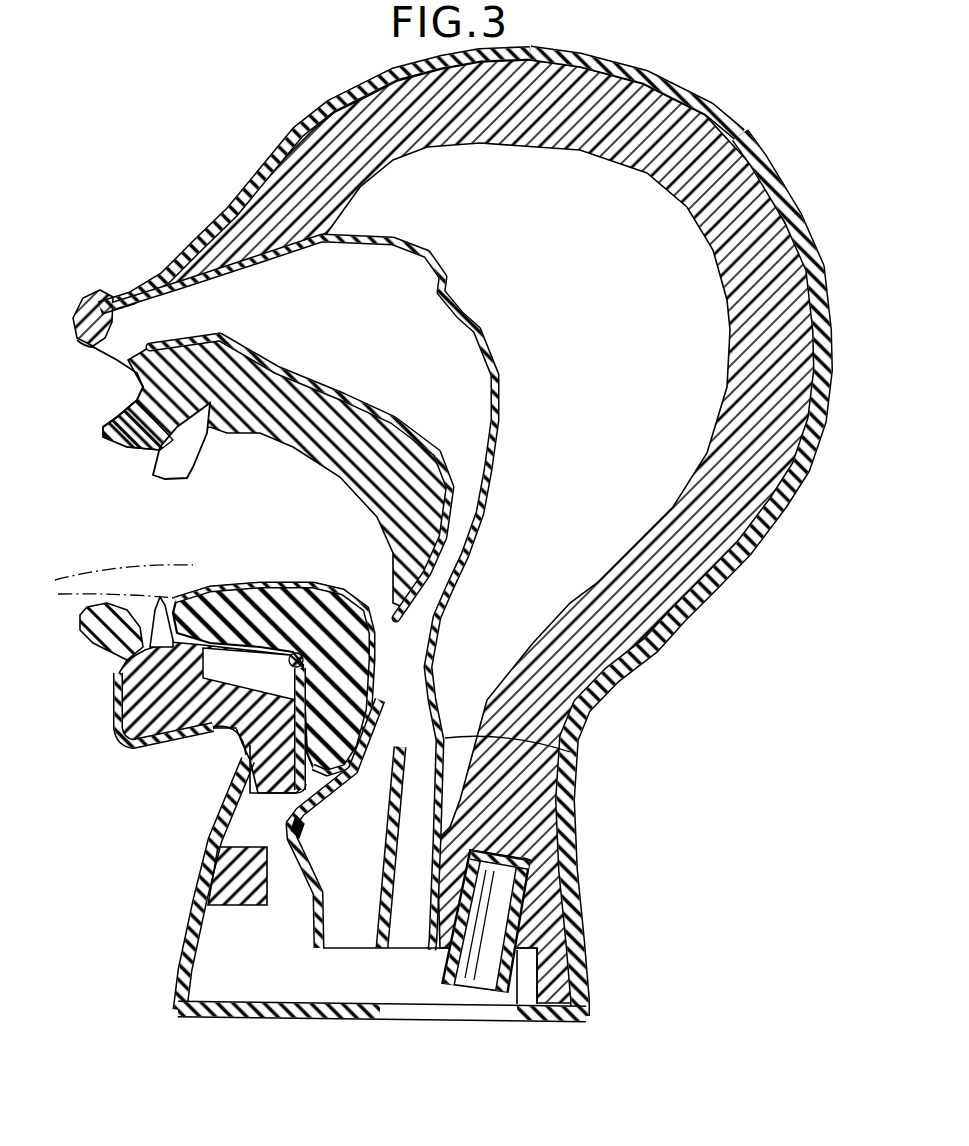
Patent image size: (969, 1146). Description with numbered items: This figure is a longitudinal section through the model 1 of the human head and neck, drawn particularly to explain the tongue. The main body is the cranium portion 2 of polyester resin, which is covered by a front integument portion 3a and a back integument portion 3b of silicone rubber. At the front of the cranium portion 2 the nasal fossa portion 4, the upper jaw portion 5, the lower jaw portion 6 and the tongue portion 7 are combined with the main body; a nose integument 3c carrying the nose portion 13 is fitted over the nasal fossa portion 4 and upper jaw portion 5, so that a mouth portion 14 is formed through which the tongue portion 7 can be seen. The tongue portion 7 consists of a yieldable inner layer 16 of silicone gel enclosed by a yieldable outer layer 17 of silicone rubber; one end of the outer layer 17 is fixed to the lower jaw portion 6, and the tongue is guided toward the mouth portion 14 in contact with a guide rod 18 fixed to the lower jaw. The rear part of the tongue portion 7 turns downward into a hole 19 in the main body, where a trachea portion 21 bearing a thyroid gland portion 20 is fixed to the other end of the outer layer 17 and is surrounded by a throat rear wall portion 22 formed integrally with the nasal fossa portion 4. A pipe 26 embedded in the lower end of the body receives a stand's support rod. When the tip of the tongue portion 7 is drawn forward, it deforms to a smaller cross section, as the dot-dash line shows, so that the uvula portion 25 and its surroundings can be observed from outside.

The model 1 is at (492, 534).
The cranium portion 2 is at (737, 527).
The front integument portion 3a is at (305, 122).
The back integument portion 3b is at (798, 237).
The nose integument 3c is at (120, 429).
The nasal fossa portion 4 is at (138, 285).
The upper jaw portion 5 is at (140, 410).
The lower jaw portion 6 is at (147, 670).
The tongue portion 7 is at (240, 583).
The nose portion 13 is at (112, 298).
The mouth portion 14 is at (148, 451).
The inner layer 16 is at (298, 590).
The outer layer 17 is at (262, 585).
The guide rod 18 is at (210, 737).
The hole 19 is at (303, 800).
The thyroid gland portion 20 is at (290, 830).
The trachea portion 21 is at (318, 950).
The throat rear wall portion 22 is at (567, 750).
The uvula portion 25 is at (397, 593).
The pipe 26 is at (547, 868).